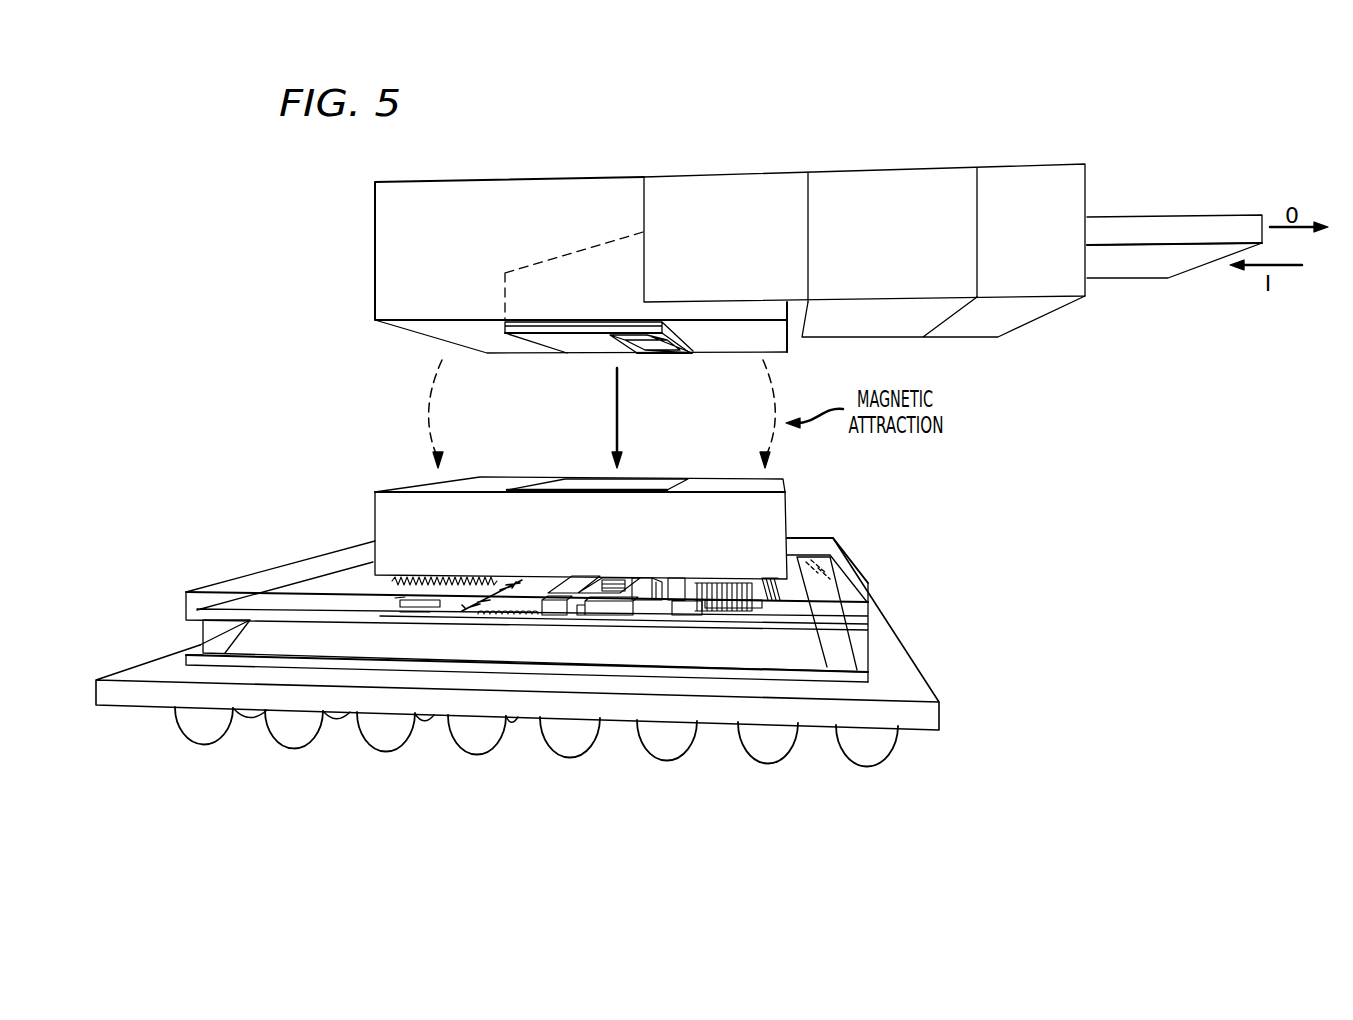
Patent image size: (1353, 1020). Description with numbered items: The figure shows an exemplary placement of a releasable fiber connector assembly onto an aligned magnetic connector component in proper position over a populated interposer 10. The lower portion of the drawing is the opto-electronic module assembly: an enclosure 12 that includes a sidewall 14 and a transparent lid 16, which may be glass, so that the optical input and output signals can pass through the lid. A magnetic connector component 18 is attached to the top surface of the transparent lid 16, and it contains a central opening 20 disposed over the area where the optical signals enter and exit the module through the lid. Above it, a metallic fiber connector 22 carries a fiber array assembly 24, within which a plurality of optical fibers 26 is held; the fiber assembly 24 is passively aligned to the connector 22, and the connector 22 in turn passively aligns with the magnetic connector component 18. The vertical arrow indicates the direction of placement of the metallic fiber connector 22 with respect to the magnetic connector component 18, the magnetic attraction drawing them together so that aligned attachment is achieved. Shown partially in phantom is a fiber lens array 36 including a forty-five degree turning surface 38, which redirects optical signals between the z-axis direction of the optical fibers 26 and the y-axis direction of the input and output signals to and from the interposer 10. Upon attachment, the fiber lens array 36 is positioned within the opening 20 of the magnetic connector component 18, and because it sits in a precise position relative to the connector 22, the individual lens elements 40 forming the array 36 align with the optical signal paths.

The interposer 10 is at (863, 682).
The enclosure 12 is at (845, 649).
The sidewall 14 is at (208, 630).
The transparent lid 16 is at (233, 583).
The magnetic connector component 18 is at (383, 507).
The central opening 20 is at (642, 483).
The metallic fiber connector 22 is at (388, 231).
The fiber array assembly 24 is at (872, 189).
The optical fibers 26 is at (1138, 227).
The fiber lens array 36 is at (549, 344).
The turning surface 38 is at (573, 252).
The lens elements 40 is at (632, 352).